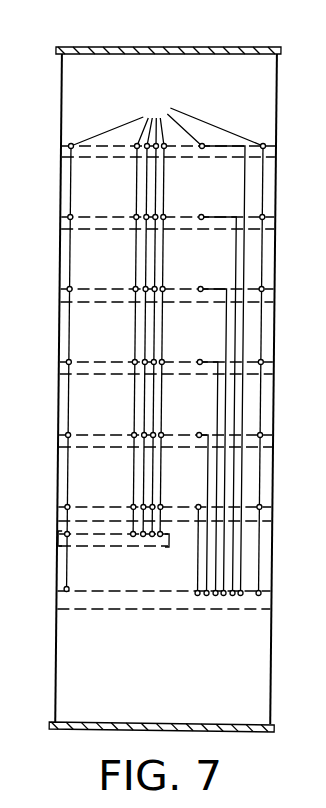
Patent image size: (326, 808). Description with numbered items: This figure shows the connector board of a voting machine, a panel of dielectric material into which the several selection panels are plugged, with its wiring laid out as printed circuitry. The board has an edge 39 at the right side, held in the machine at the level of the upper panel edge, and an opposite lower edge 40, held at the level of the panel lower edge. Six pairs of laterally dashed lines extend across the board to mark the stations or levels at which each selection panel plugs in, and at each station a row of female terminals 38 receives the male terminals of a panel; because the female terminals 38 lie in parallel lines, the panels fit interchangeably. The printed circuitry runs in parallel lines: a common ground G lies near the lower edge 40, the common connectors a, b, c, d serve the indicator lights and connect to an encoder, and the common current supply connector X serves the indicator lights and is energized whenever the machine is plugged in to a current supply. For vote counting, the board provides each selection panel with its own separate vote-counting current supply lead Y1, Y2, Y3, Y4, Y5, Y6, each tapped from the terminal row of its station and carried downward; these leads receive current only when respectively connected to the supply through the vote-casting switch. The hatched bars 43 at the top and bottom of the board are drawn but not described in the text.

The end plates 43 is at (168, 47).
The female terminals 38 is at (167, 122).
The lower edge 40 is at (61, 652).
The edge 39 is at (277, 656).
The common ground G is at (66, 327).
The common current supply connector X is at (265, 330).
The vote-counting current supply lead Y1 is at (245, 173).
The vote-counting current supply lead Y2 is at (237, 247).
The vote-counting current supply lead Y3 is at (228, 321).
The vote-counting current supply lead Y4 is at (220, 393).
The vote-counting current supply lead Y5 is at (211, 468).
The vote-counting current supply lead Y6 is at (202, 571).
The common connector a is at (137, 245).
The common connector b is at (147, 270).
The common connector c is at (156, 319).
The common connector d is at (164, 343).